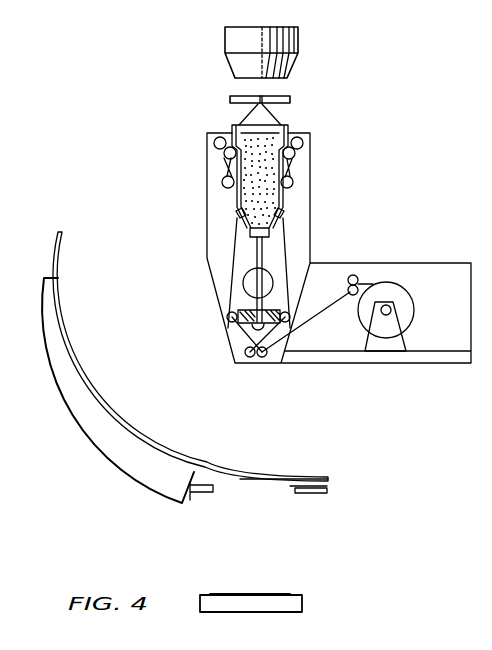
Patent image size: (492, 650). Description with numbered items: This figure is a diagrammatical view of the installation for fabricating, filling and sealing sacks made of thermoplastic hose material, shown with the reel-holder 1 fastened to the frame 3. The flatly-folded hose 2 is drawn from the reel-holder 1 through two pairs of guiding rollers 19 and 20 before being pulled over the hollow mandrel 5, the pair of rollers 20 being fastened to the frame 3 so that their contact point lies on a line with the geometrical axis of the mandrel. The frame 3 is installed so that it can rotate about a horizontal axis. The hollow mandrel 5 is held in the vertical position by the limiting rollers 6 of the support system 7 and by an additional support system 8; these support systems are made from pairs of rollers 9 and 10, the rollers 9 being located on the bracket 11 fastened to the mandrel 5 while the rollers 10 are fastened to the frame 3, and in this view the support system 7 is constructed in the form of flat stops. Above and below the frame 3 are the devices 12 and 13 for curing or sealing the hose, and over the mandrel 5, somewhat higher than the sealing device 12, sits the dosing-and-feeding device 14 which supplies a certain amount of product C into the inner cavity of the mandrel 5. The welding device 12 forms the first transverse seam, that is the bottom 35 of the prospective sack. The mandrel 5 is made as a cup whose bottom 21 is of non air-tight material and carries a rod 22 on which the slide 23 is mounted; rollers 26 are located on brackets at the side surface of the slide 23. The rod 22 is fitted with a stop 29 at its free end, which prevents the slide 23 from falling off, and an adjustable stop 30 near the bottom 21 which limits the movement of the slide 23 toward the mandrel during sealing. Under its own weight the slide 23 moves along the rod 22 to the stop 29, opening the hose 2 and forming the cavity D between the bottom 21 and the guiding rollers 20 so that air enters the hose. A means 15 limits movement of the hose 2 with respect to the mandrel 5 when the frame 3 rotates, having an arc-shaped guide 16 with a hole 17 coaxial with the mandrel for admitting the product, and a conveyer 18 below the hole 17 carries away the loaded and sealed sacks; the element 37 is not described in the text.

The reel-holder 1 is at (398, 343).
The flatly-folded hose 2 is at (326, 308).
The frame 3 is at (218, 270).
The hollow mandrel 5 is at (237, 207).
The limiting rollers 6 is at (292, 182).
The support system 7 is at (237, 215).
The additional support system 8 is at (217, 155).
The rollers 9 is at (296, 155).
The rollers 10 is at (298, 138).
The bracket 11 is at (220, 173).
The welding or sealing device 12 is at (232, 100).
The sealing device 13 is at (200, 492).
The dosing-and-feeding device 14 is at (231, 58).
The means limiting the movement of the hose 15 is at (79, 437).
The arc-shaped guide 16 is at (74, 352).
The hole 17 is at (268, 478).
The conveyer 18 is at (205, 598).
The guiding rollers 19 is at (356, 275).
The guiding rollers 20 is at (251, 358).
The bottom 21 is at (250, 236).
The rod 22 is at (260, 251).
The slide 23 is at (240, 324).
The rollers 26 is at (227, 318).
The stop 29 is at (258, 333).
The stop 30 is at (279, 216).
The bottom of the sack 35 is at (263, 99).
The strip end gap 37 is at (292, 489).
The product C is at (276, 202).
The cavity D is at (275, 262).